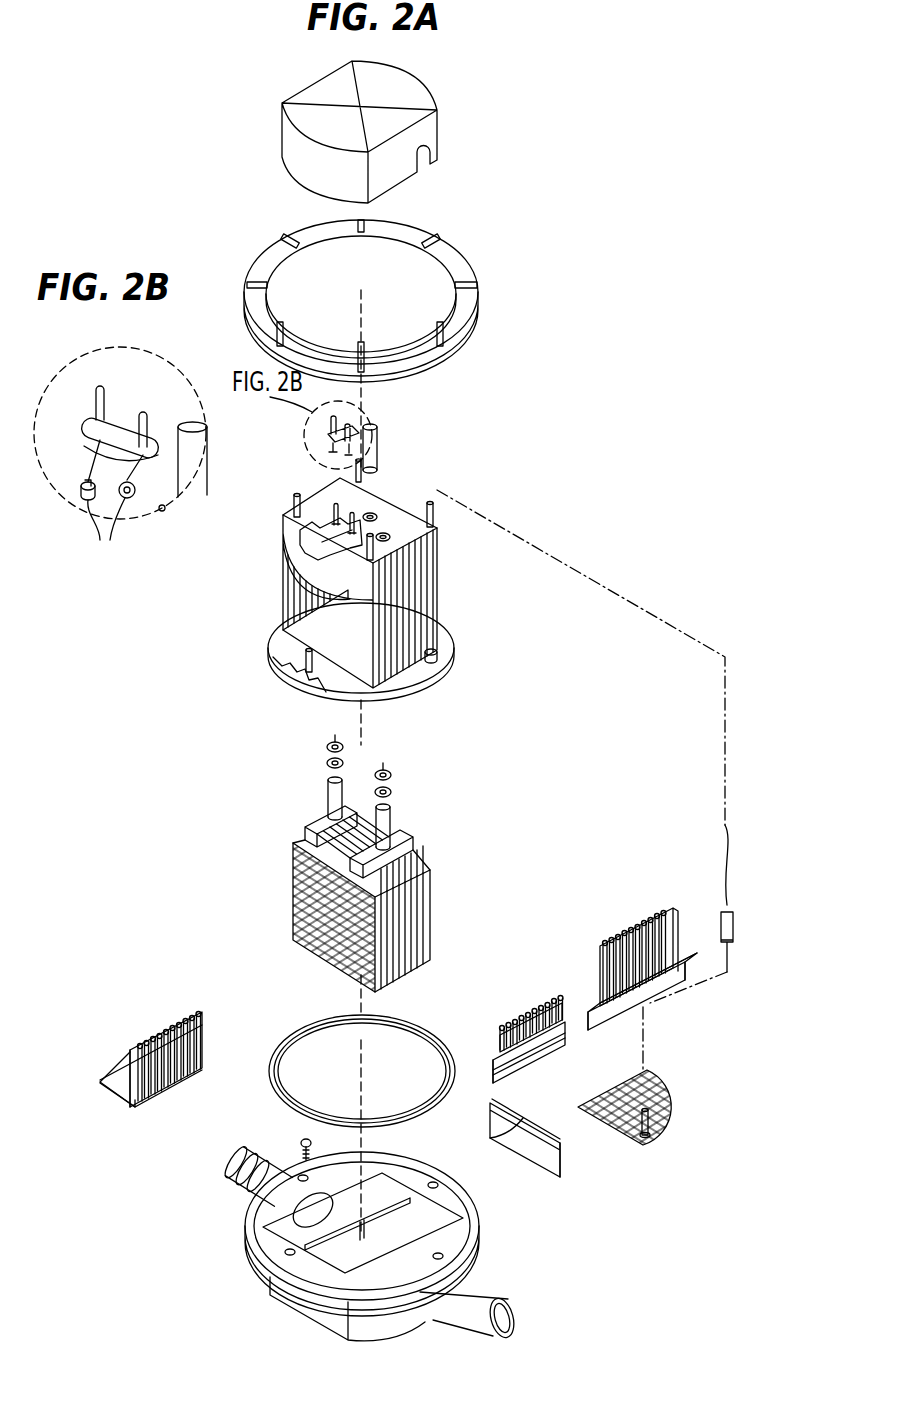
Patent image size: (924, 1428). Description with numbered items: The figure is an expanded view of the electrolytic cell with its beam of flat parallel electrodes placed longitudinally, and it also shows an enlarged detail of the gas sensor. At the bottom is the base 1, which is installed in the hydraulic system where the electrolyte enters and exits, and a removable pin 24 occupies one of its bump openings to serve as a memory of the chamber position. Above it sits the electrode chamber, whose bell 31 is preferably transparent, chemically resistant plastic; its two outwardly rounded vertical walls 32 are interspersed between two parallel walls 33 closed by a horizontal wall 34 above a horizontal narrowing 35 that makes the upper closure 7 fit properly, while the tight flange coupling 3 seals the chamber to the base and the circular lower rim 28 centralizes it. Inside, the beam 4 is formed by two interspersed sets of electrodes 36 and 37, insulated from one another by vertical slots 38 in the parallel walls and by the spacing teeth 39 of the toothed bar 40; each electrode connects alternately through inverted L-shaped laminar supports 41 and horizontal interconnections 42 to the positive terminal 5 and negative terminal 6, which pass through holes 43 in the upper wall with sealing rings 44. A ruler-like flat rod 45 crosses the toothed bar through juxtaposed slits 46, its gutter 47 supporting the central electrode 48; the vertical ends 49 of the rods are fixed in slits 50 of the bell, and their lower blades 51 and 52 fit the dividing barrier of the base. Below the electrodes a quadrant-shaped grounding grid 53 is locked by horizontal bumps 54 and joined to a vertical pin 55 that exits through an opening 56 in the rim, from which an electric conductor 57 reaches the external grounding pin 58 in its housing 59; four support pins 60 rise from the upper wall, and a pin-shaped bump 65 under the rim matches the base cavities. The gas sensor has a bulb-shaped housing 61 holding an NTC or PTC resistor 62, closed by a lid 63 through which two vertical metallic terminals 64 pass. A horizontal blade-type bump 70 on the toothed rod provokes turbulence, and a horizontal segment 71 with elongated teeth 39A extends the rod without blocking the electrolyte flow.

In FIG. 2A, the base 1 is at (302, 1305).
In FIG. 2A, the tight flange coupling 3 is at (468, 288).
In FIG. 2A, the beam 4 is at (292, 904).
In FIG. 2A, the positive terminal 5 is at (335, 802).
In FIG. 2A, the negative terminal 6 is at (387, 820).
In FIG. 2A, the upper closure 7 is at (434, 137).
In FIG. 2A, the removable pin 24 is at (305, 1140).
In FIG. 2A, the lower rim 28 is at (407, 683).
In FIG. 2A, the bell 31 is at (447, 601).
In FIG. 2A, the opposing vertical walls 32 is at (292, 637).
In FIG. 2A, the opposing parallel walls 33 is at (405, 603).
In FIG. 2A, the horizontal wall 34 is at (432, 502).
In FIG. 2A, the horizontal narrowing point 35 is at (433, 540).
In FIG. 2A, the set of electrodes 36 is at (430, 912).
In FIG. 2A, the set of electrodes 37 is at (425, 863).
In FIG. 2A, the vertical slots 38 is at (290, 588).
In FIG. 2A, the spacing teeth 39 is at (548, 1016).
In FIG. 2A, the elongated teeth 39A is at (655, 912).
In FIG. 2A, the toothed bar 40 is at (514, 1045).
In FIG. 2A, the laminar conducting supports 41 is at (302, 843).
In FIG. 2A, the horizontal interconnections 42 is at (320, 818).
In FIG. 2A, the holes 43 is at (383, 533).
In FIG. 2A, the sealing rings 44 is at (391, 792).
In FIG. 2A, the flat rod 45 is at (543, 1157).
In FIG. 2A, the slits 46 is at (655, 1012).
In FIG. 2A, the gutter 47 is at (555, 1132).
In FIG. 2A, the central electrode 48 is at (402, 923).
In FIG. 2A, the vertical ends 49 is at (575, 1005).
In FIG. 2A, the slits 50 is at (306, 658).
In FIG. 2A, the lower blade 51 is at (518, 1075).
In FIG. 2A, the lower blade 52 is at (558, 1173).
In FIG. 2A, the grounding metallic grid 53 is at (665, 1087).
In FIG. 2A, the horizontal bumps 54 is at (690, 990).
In FIG. 2A, the vertical pin 55 is at (655, 1128).
In FIG. 2A, the opening 56 is at (440, 655).
In FIG. 2A, the electric conductor 57 is at (728, 863).
In FIG. 2A, the external grounding pin 58 is at (377, 437).
In FIG. 2A, the housing 59 is at (367, 515).
In FIG. 2A, the pins 60 is at (290, 497).
In FIG. 2A, the bulb-shaped housing 61 is at (288, 537).
In FIG. 2B, the NTC or PTC resistor 62 is at (120, 495).
In FIG. 2B, the lid 63 is at (83, 427).
In FIG. 2B, the vertical metallic terminals 64 is at (145, 413).
In FIG. 2A, the pin-shaped bump 65 is at (307, 681).
In FIG. 2A, the horizontal blade-type bump 70 is at (588, 1018).
In FIG. 2A, the horizontal segment 71 is at (123, 1077).